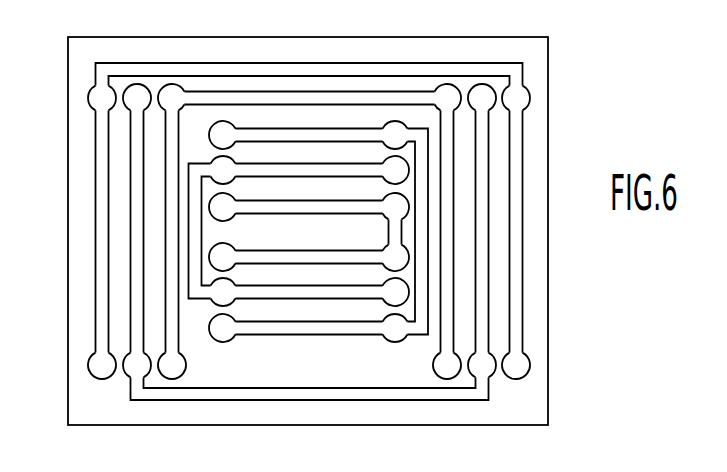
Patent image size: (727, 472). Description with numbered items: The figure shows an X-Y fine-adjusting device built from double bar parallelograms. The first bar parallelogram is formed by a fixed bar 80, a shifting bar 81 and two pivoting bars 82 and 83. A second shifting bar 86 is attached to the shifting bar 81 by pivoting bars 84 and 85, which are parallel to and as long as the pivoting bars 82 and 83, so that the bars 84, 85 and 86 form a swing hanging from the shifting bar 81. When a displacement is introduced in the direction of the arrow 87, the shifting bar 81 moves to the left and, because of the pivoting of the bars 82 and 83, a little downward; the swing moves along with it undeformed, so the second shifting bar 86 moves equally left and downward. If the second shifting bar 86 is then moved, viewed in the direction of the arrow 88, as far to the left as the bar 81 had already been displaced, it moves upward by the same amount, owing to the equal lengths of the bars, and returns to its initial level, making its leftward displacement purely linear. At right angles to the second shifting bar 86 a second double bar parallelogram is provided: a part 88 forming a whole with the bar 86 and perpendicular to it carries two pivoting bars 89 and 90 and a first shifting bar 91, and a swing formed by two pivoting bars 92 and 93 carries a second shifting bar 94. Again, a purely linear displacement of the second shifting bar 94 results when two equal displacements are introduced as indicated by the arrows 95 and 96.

The fixed bar 80 is at (175, 417).
The shifting bar 81 is at (249, 87).
The pivoting bar 82 is at (118, 192).
The pivoting bar 83 is at (502, 148).
The pivoting bar 84 is at (155, 153).
The pivoting bar 85 is at (463, 197).
The second shifting bar 86 is at (372, 373).
The arrow 87 is at (520, 82).
The arrow 88 is at (183, 287).
The pivoting bar 89 is at (296, 150).
The pivoting bar 90 is at (357, 308).
The first shifting bar 91 is at (408, 233).
The pivoting bar 92 is at (340, 188).
The pivoting bar 93 is at (272, 280).
The second shifting bar 94 is at (206, 235).
The arrow 95 is at (415, 332).
The arrow 96 is at (206, 298).